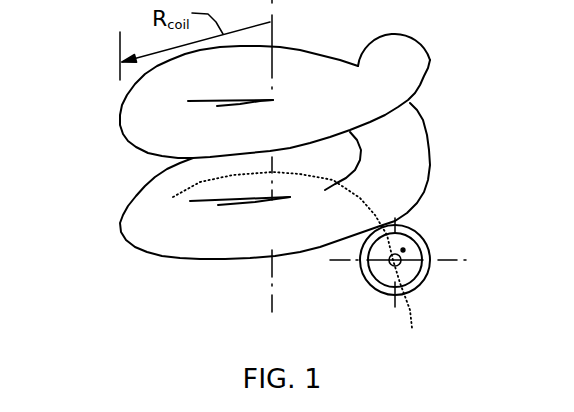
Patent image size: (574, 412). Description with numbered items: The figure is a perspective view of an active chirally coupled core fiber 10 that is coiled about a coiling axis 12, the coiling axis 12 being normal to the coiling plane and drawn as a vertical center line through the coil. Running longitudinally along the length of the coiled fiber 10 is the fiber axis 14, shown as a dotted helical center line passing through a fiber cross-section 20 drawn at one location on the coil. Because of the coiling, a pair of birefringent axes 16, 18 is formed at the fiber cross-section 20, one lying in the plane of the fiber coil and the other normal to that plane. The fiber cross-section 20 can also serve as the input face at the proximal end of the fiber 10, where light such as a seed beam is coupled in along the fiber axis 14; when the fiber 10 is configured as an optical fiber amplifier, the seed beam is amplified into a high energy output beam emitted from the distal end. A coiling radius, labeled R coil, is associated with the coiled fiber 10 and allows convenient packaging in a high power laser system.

The active chirally coupled core fiber 10 is at (233, 152).
The coiling axis 12 is at (231, 172).
The fiber axis 14 is at (326, 260).
The birefringent axis 16 is at (420, 258).
The birefringent axis 18 is at (374, 284).
The fiber cross-section 20 is at (447, 285).